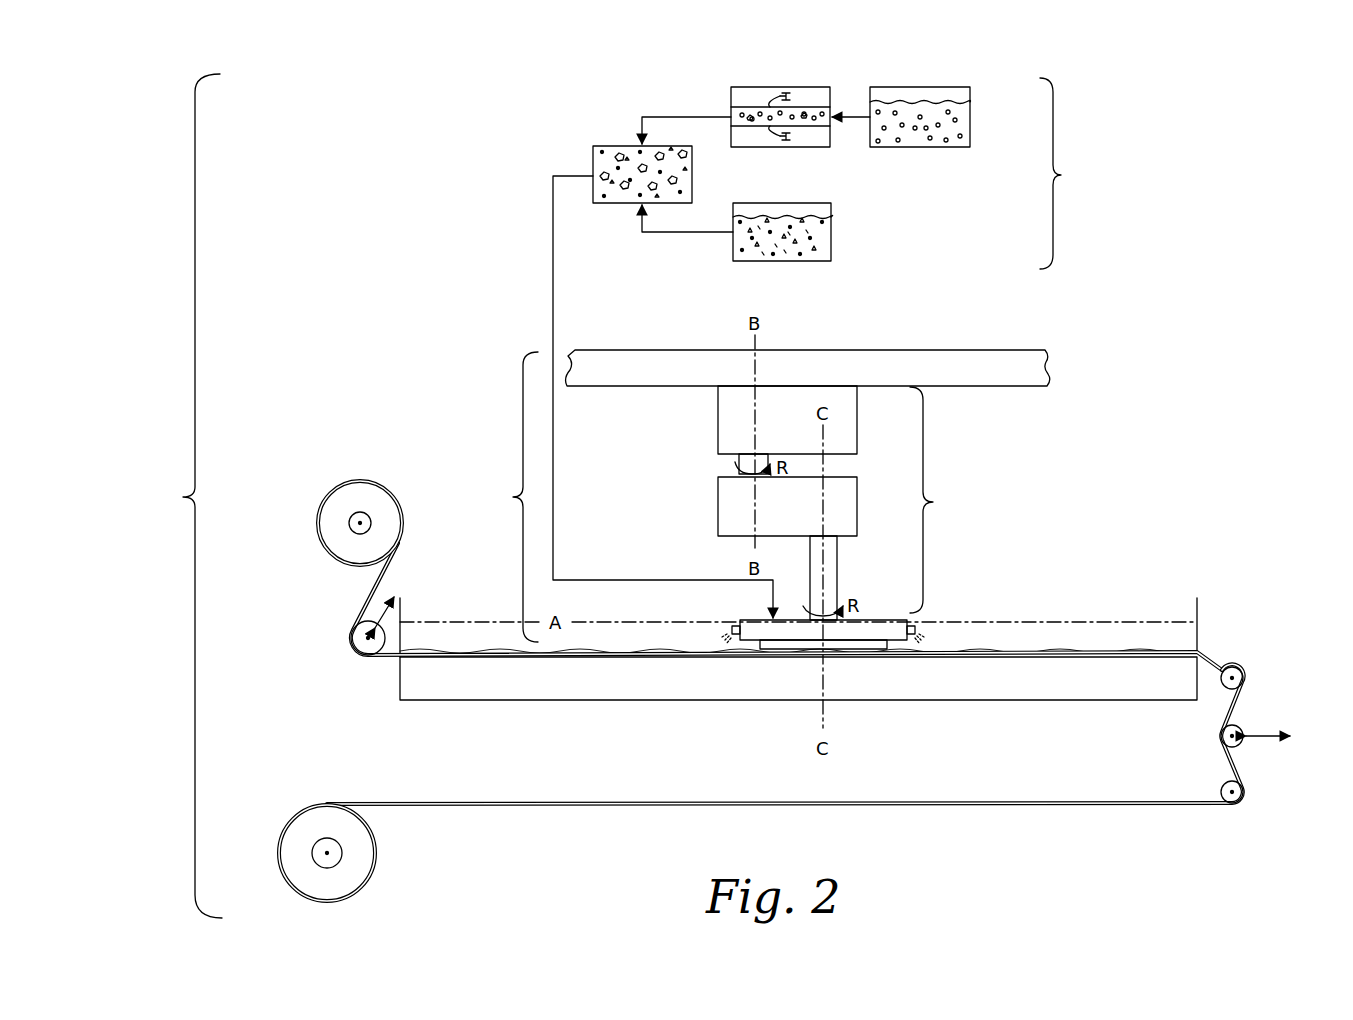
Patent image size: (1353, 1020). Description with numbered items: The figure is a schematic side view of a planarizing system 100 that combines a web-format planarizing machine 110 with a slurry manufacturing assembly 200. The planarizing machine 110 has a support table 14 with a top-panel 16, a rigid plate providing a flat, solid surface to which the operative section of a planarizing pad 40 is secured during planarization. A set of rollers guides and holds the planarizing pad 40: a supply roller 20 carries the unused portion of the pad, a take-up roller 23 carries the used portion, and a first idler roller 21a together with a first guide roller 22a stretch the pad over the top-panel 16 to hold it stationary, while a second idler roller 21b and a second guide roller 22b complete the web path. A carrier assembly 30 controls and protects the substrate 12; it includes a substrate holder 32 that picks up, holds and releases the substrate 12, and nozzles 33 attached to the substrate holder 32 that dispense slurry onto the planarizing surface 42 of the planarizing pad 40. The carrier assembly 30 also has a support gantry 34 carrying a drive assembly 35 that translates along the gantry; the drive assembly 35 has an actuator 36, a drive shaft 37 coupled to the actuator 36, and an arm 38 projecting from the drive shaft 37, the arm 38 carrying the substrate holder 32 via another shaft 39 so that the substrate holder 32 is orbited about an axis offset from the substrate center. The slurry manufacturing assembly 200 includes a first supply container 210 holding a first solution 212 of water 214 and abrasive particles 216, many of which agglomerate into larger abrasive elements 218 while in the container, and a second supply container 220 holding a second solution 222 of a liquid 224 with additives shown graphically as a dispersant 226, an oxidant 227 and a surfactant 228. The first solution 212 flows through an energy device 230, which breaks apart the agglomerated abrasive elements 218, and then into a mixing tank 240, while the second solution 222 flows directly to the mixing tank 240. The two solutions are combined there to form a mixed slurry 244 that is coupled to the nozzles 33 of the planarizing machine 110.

The planarizing system 100 is at (174, 496).
The slurry manufacturing assembly 200 is at (1071, 173).
The energy device 230 is at (754, 85).
The first supply container 210 is at (920, 85).
The first solution 212 is at (965, 92).
The water 214 is at (965, 130).
The abrasive particles 216 is at (920, 125).
The abrasive elements 218 is at (905, 110).
The mixing tank 240 is at (616, 140).
The mixed slurry 244 is at (692, 176).
The second supply container 220 is at (780, 200).
The second solution 222 is at (830, 207).
The liquid 224 is at (830, 240).
The dispersant 226 is at (748, 258).
The oxidant 227 is at (812, 260).
The surfactant 228 is at (768, 255).
The support gantry 34 is at (1015, 360).
The carrier assembly 30 is at (506, 497).
The drive assembly 35 is at (937, 500).
The actuator 36 is at (727, 434).
The drive shaft 37 is at (735, 463).
The arm 38 is at (857, 504).
The shaft 39 is at (830, 578).
The nozzles 33 is at (728, 637).
The substrate 12 is at (860, 640).
The substrate holder 32 is at (912, 622).
The planarizing pad 40 is at (1040, 650).
The planarizing surface 42 is at (1105, 650).
The support table 14 is at (727, 683).
The top-panel 16 is at (400, 662).
The supply roller 20 is at (355, 528).
The first idler roller 21a is at (350, 647).
The take-up roller 23 is at (322, 848).
The first guide roller 22a is at (1243, 675).
The second idler roller 21b is at (1240, 740).
The second guide roller 22b is at (1243, 795).
The planarizing machine 110 is at (1112, 498).